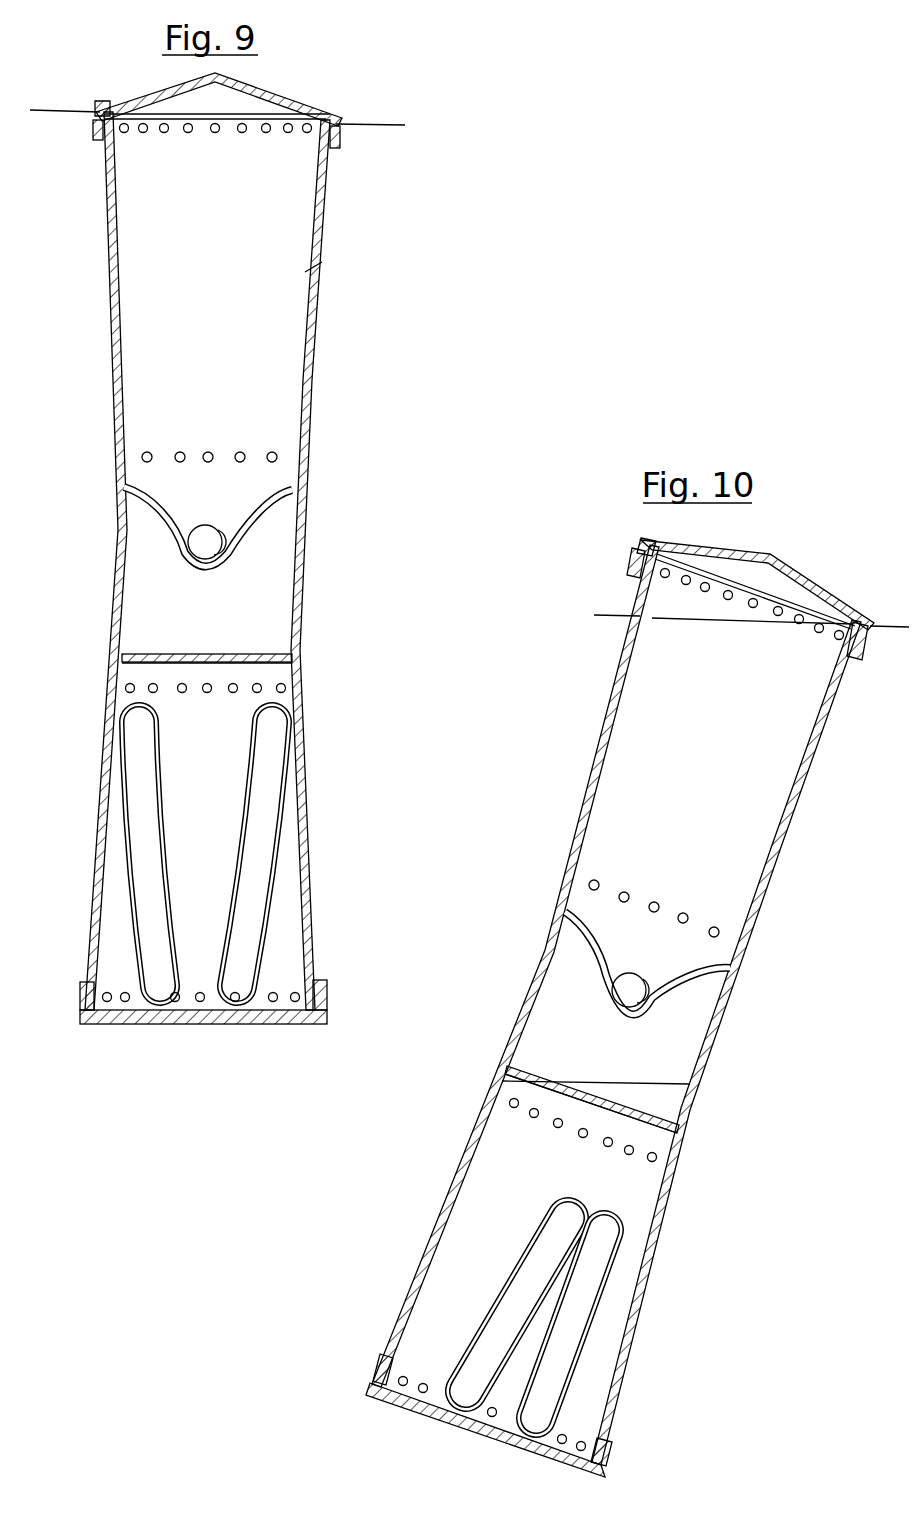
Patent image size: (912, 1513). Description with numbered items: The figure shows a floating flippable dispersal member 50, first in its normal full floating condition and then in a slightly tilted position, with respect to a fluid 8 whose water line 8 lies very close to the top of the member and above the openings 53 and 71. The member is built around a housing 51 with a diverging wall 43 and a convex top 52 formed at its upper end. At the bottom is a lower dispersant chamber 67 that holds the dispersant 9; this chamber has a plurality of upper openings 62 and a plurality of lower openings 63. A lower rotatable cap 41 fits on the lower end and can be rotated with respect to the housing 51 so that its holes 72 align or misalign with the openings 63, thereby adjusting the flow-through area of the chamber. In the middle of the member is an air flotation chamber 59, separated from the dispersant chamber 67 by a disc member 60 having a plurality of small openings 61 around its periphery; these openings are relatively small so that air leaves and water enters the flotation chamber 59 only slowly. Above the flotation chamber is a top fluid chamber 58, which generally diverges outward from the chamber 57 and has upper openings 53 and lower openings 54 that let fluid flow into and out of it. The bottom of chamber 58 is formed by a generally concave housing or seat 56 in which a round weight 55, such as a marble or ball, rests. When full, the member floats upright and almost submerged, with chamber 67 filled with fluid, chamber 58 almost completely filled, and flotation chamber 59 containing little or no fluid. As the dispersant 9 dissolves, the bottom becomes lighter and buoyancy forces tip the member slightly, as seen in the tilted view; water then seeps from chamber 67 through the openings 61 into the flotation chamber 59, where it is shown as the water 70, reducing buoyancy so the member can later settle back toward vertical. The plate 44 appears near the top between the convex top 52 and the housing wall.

In FIG. 9, the fluid 8 is at (62, 110).
In FIG. 10, the fluid 8 is at (617, 615).
In FIG. 9, the dispersant 9 is at (165, 832).
In FIG. 10, the dispersant 9 is at (520, 1272).
In FIG. 9, the lower rotatable cap 41 is at (175, 1027).
In FIG. 10, the lower rotatable cap 41 is at (400, 1400).
In FIG. 9, the diverging wall 43 is at (140, 312).
In FIG. 10, the diverging wall 43 is at (620, 775).
In FIG. 9, the top plate 44 is at (165, 100).
In FIG. 10, the top plate 44 is at (773, 585).
In FIG. 9, the floating flippable dispersal member 50 is at (352, 104).
In FIG. 10, the floating flippable dispersal member 50 is at (608, 650).
In FIG. 9, the housing 51 is at (323, 238).
In FIG. 10, the housing 51 is at (726, 1042).
In FIG. 9, the convex top 52 is at (297, 100).
In FIG. 10, the convex top 52 is at (812, 590).
In FIG. 9, the upper openings 53 is at (215, 135).
In FIG. 10, the upper openings 53 is at (840, 640).
In FIG. 9, the lower openings 54 is at (240, 452).
In FIG. 10, the lower openings 54 is at (718, 930).
In FIG. 9, the round weight 55 is at (193, 525).
In FIG. 10, the round weight 55 is at (605, 958).
In FIG. 9, the concave housing or seat 56 is at (258, 500).
In FIG. 10, the concave housing or seat 56 is at (725, 978).
In FIG. 9, the chamber 57 is at (305, 270).
In FIG. 9, the top fluid chamber 58 is at (188, 270).
In FIG. 10, the top fluid chamber 58 is at (676, 800).
In FIG. 9, the air flotation chamber 59 is at (205, 602).
In FIG. 10, the air flotation chamber 59 is at (586, 1052).
In FIG. 9, the disc member 60 is at (258, 653).
In FIG. 10, the disc member 60 is at (690, 1108).
In FIG. 9, the small openings 61 is at (232, 652).
In FIG. 10, the small openings 61 is at (565, 1083).
In FIG. 9, the upper openings 62 is at (207, 692).
In FIG. 10, the upper openings 62 is at (556, 1124).
In FIG. 9, the lower openings 63 is at (125, 994).
In FIG. 10, the lower openings 63 is at (582, 1445).
In FIG. 9, the lower dispersant chamber 67 is at (198, 830).
In FIG. 10, the lower dispersant chamber 67 is at (551, 1187).
In FIG. 10, the water in flotation chamber 70 is at (647, 1081).
In FIG. 9, the openings 71 is at (93, 128).
In FIG. 10, the openings 71 is at (648, 560).
In FIG. 9, the holes 72 is at (78, 996).
In FIG. 10, the holes 72 is at (378, 1372).